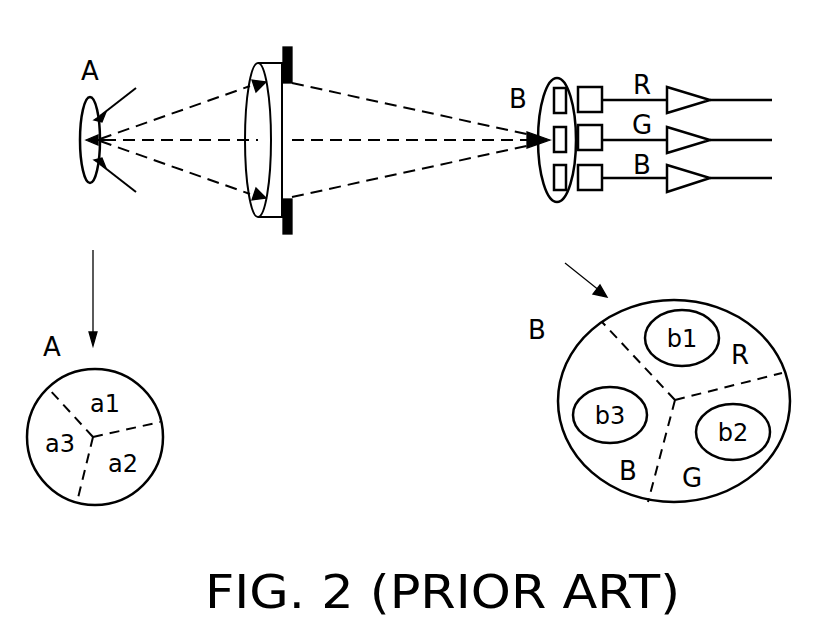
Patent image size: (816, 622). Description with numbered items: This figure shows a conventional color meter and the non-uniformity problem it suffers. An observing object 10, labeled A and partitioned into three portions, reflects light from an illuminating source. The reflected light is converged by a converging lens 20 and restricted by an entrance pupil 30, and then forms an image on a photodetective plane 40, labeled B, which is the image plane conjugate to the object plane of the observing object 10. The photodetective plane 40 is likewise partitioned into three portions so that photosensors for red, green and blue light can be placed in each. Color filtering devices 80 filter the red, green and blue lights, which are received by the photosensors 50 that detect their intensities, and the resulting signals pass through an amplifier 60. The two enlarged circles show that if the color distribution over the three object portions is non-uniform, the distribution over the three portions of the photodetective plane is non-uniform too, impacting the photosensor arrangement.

The observing object 10 is at (88, 176).
The converging lens 20 is at (250, 200).
The entrance pupil 30 is at (292, 232).
The photodetective plane 40 is at (545, 160).
The photosensors 50 is at (606, 108).
The amplifier 60 is at (700, 174).
The color filtering devices 80 is at (568, 172).